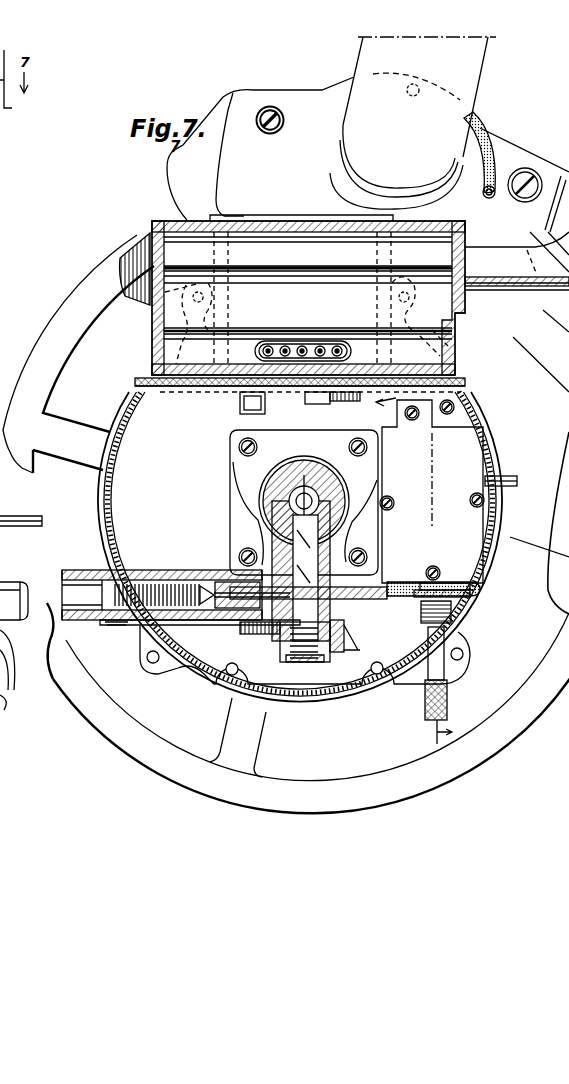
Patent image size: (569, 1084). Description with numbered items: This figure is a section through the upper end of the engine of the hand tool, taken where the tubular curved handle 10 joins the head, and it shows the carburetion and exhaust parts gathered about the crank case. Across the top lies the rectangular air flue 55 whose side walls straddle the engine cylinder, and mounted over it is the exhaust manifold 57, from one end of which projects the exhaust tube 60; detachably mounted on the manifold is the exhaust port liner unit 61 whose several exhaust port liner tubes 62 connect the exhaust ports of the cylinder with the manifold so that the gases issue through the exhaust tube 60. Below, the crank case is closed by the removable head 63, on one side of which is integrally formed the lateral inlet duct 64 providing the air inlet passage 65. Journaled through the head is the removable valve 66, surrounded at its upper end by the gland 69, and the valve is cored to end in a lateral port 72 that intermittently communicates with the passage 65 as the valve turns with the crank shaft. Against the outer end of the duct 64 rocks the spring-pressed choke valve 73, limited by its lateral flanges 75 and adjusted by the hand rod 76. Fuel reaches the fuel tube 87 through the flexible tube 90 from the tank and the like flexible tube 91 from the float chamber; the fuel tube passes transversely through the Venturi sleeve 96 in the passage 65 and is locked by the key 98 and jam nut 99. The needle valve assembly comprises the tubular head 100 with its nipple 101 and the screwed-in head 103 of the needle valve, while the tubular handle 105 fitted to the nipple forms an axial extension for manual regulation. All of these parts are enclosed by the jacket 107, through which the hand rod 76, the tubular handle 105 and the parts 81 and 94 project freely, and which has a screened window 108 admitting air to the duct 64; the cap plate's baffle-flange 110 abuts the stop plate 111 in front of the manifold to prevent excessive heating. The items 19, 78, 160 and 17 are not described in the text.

The curved handle 10 is at (473, 90).
The slot 19 is at (502, 167).
The flexible tube 90 is at (498, 172).
The rectangular air flue 55 is at (270, 219).
The exhaust manifold 57 is at (152, 242).
The exhaust tube 60 is at (496, 260).
The exhaust port liner unit 61 is at (330, 338).
The exhaust port liner tubes 62 is at (322, 342).
The removable head 63 is at (348, 498).
The lateral inlet duct 64 is at (330, 542).
The air inlet passage 65 is at (272, 500).
The removable valve 66 is at (296, 486).
The gland 69 is at (305, 578).
The lateral port 72 is at (307, 490).
The choke valve 73 is at (334, 642).
The lateral flanges 75 is at (240, 630).
The hand rod 76 is at (116, 621).
The drum 78 is at (470, 466).
The pin 81 is at (527, 482).
The fuel tube 87 is at (372, 588).
The flexible tube 91 is at (414, 583).
The screw 94 is at (447, 690).
The Venturi sleeve 96 is at (290, 662).
The key 98 is at (288, 648).
The jam nut 99 is at (232, 548).
The tubular head 100 is at (240, 566).
The nipple 101 is at (232, 580).
The head of needle valve 103 is at (138, 622).
The tubular handle 105 is at (96, 571).
The jacket 107 is at (125, 428).
The screened window 108 is at (318, 712).
The baffle-flange 110 is at (235, 392).
The stop plate 111 is at (240, 402).
The member 160 is at (17, 123).
The plate 17 is at (6, 520).